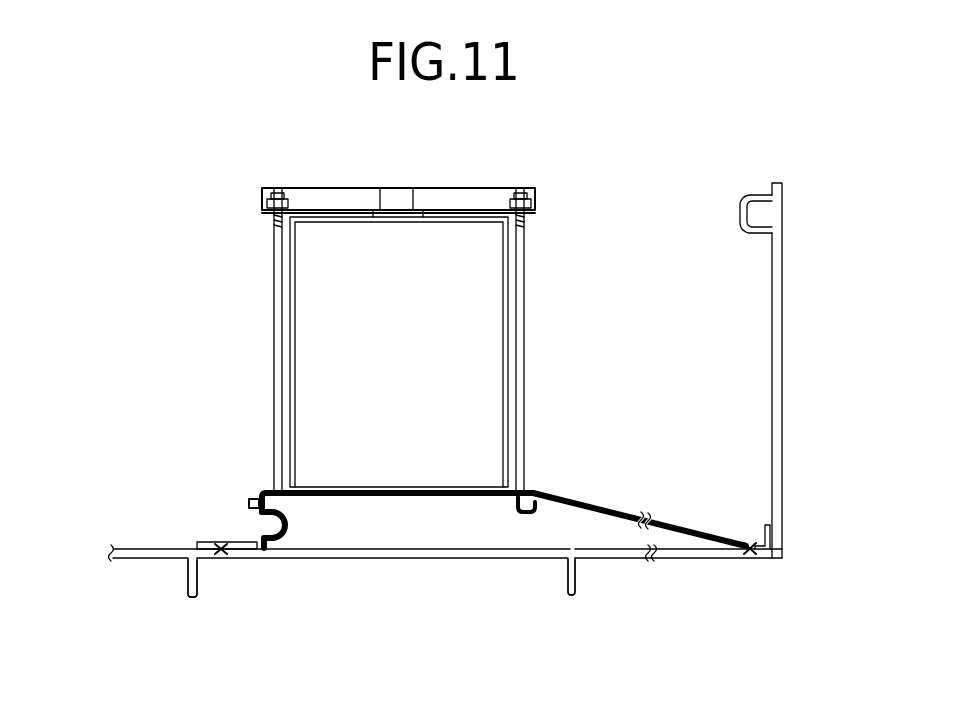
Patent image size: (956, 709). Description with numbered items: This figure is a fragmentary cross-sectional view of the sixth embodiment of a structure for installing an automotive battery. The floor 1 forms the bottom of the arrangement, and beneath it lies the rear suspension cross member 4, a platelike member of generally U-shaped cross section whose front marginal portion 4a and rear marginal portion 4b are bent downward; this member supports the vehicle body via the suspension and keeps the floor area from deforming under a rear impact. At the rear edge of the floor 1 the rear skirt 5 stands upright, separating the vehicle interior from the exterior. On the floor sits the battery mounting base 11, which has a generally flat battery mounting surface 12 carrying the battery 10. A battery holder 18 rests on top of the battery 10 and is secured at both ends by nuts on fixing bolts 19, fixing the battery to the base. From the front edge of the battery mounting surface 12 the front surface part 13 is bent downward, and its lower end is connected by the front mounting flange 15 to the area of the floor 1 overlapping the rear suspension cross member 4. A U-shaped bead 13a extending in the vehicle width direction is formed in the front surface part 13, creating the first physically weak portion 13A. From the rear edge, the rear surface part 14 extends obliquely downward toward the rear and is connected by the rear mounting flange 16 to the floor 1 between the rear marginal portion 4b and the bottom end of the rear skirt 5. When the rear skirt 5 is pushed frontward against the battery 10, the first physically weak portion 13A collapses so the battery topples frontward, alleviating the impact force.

The floor 1 is at (607, 550).
The rear suspension cross member 4 is at (372, 558).
The front marginal portion 4a is at (190, 585).
The rear marginal portion 4b is at (577, 585).
The rear skirt 5 is at (783, 255).
The battery 10 is at (490, 320).
The battery mounting base 11 is at (548, 481).
The battery mounting surface 12 is at (437, 500).
The front surface part 13 is at (258, 500).
The bead 13a is at (249, 505).
The first physically weak portion 13A is at (218, 532).
The rear surface part 14 is at (607, 508).
The front mounting flange 15 is at (222, 553).
The rear mounting flange 16 is at (752, 545).
The battery holder 18 is at (340, 198).
The fixing bolts 19 is at (273, 270).